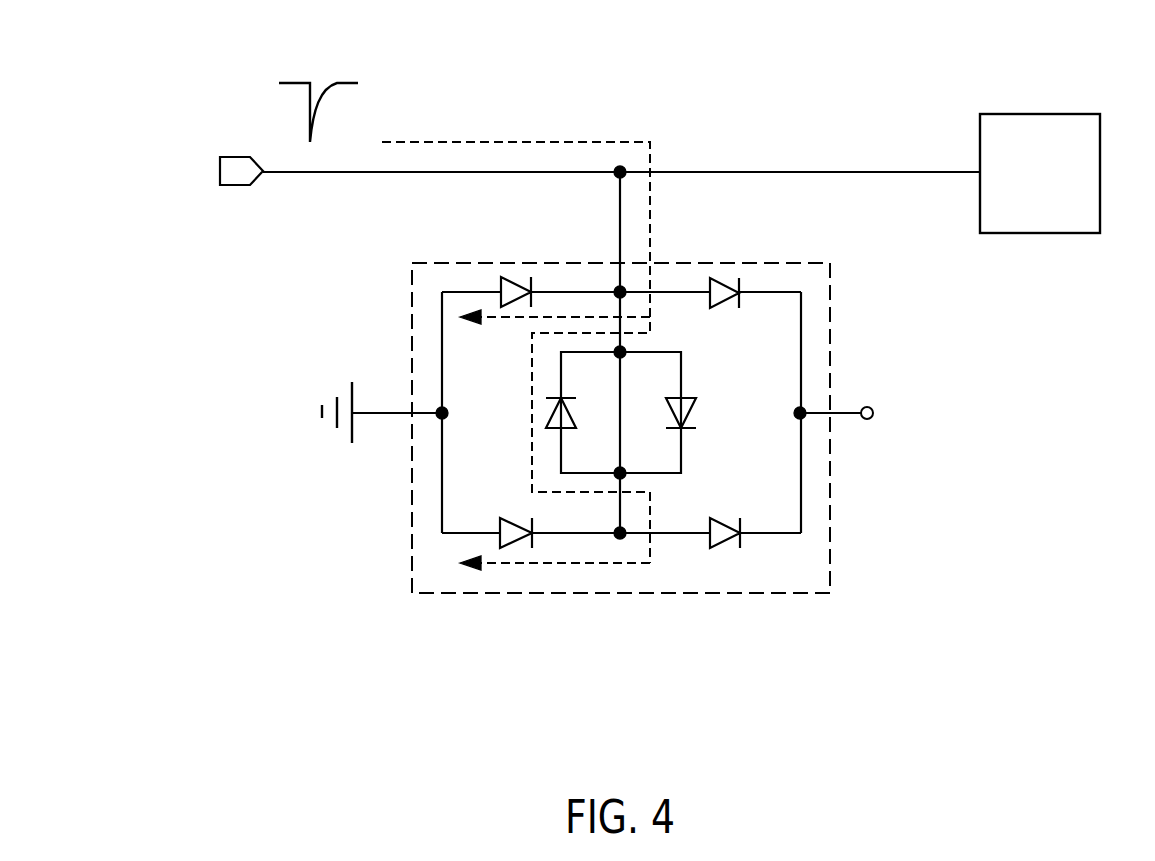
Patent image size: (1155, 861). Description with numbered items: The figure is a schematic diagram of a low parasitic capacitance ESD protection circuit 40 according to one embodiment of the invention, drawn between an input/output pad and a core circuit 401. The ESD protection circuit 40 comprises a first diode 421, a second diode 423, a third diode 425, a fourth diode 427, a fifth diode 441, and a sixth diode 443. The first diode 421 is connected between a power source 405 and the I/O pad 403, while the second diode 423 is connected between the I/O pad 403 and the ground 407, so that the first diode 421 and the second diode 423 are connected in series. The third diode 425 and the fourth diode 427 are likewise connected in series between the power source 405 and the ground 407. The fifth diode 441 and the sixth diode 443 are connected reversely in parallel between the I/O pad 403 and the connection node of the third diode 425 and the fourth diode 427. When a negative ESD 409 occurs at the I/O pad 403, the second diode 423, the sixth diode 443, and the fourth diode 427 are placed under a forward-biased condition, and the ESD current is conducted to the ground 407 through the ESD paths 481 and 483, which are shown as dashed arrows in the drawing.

The low parasitic capacitance ESD protection circuit 40 is at (830, 555).
The core circuit 401 is at (1047, 114).
The input/output (I/O) pad 403 is at (227, 155).
The power source 405 is at (867, 407).
The ground 407 is at (353, 398).
The negative ESD 409 is at (279, 83).
The first diode 421 is at (725, 278).
The second diode 423 is at (513, 280).
The third diode 425 is at (723, 548).
The fourth diode 427 is at (515, 518).
The fifth diode 441 is at (696, 410).
The sixth diode 443 is at (546, 412).
The ESD path 481 is at (523, 318).
The ESD path 483 is at (537, 565).